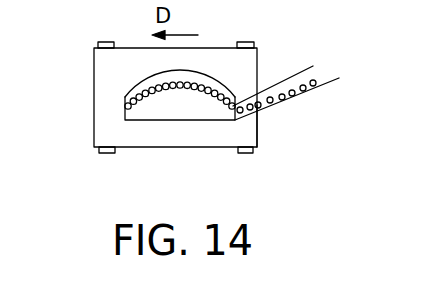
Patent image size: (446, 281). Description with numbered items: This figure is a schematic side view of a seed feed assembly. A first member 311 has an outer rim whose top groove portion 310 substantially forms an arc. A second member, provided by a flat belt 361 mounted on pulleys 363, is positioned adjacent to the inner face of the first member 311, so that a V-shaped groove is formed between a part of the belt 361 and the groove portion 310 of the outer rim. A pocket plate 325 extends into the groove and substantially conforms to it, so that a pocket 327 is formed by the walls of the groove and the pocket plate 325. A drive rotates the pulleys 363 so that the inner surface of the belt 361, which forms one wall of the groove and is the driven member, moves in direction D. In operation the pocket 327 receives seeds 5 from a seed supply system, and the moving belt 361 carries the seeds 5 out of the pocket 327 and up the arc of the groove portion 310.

The seeds 5 is at (314, 80).
The groove portion 310 is at (217, 78).
The first member 311 is at (110, 105).
The pocket plate 325 is at (310, 90).
The pocket 327 is at (258, 117).
The flat belt 361 is at (108, 93).
The pulleys 363 is at (98, 153).